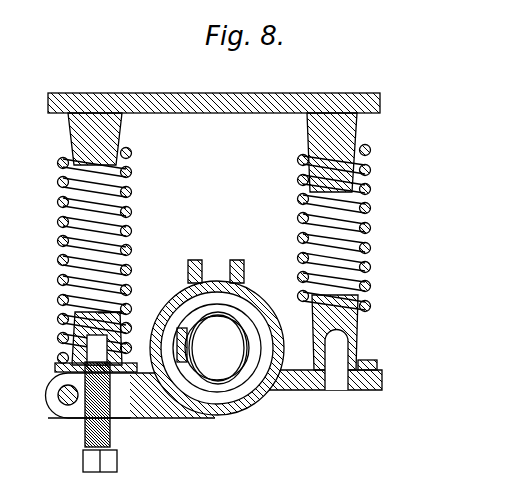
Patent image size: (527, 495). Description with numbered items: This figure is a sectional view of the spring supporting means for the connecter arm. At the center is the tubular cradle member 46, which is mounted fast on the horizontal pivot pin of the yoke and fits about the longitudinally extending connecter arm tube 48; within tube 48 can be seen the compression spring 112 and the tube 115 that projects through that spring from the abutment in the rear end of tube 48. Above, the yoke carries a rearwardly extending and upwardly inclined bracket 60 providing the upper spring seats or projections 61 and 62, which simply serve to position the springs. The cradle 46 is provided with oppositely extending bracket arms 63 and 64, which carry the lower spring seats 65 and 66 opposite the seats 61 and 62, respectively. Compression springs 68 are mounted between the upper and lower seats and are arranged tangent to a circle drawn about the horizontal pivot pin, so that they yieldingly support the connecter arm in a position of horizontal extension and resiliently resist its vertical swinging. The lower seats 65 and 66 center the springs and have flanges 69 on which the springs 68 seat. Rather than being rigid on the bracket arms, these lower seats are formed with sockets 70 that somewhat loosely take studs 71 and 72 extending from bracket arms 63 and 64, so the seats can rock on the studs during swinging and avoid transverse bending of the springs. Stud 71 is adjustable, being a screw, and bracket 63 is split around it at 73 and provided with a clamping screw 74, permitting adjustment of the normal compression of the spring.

The bracket 60 is at (205, 95).
The spring seat 61 is at (118, 150).
The spring seat 62 is at (353, 146).
The compression springs 68 is at (298, 218).
The compression spring 112 is at (217, 306).
The cradle member 46 is at (266, 292).
The socket 70 is at (130, 306).
The spring seat 66 is at (356, 297).
The spring seat 65 is at (73, 326).
The flanges 69 is at (395, 357).
The tube 115 is at (200, 362).
The clamping screw 74 is at (62, 396).
The split 73 is at (66, 408).
The stud 71 is at (93, 400).
The bracket arm 63 is at (148, 408).
The connecter arm tube 48 is at (240, 410).
The stud 72 is at (340, 365).
The bracket arm 64 is at (376, 387).